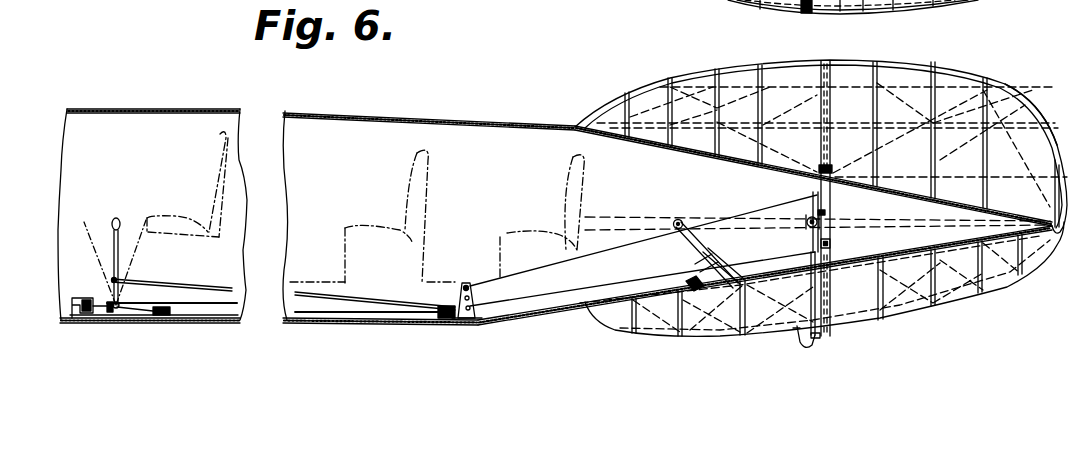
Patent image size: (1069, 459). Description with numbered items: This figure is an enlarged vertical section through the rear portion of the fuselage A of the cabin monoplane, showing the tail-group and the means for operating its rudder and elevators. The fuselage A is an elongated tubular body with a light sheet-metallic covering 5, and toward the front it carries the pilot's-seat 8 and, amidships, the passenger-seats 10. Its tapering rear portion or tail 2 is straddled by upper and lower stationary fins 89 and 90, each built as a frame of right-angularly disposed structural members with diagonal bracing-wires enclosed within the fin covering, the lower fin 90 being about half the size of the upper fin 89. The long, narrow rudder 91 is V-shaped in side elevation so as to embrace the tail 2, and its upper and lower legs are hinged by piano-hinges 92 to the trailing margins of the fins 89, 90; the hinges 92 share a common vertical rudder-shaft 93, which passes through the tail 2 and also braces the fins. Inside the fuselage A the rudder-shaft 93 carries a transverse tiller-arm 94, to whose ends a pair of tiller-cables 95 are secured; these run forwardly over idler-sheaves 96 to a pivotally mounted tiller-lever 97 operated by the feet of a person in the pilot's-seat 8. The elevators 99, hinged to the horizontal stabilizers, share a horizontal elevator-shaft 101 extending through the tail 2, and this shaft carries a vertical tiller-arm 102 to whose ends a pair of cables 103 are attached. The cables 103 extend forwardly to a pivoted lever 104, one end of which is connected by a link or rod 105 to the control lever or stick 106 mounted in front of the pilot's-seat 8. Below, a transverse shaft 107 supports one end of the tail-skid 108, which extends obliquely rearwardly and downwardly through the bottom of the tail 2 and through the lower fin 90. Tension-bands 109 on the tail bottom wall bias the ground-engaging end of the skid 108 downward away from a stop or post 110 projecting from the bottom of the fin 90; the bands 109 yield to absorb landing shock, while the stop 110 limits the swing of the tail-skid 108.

The tail 2 is at (1010, 210).
The covering 5 is at (547, 314).
The pilot's-seat 8 is at (176, 218).
The passenger-seats 10 is at (507, 235).
The upper fin 89 is at (667, 84).
The lower fin 90 is at (657, 336).
The rudder 91 is at (1020, 102).
The piano-hinges 92 is at (832, 97).
The rudder-shaft 93 is at (812, 193).
The tiller-arm 94 is at (832, 243).
The tiller-cables 95 is at (208, 316).
The idler-sheaves 96 is at (162, 320).
The tiller-lever 97 is at (88, 297).
The elevators 99 is at (982, 1).
The elevator-shaft 101 is at (806, 226).
The vertical tiller-arm 102 is at (825, 212).
The cables 103 is at (640, 282).
The pivoted lever 104 is at (480, 288).
The link or rod 105 is at (208, 288).
The control lever 106 is at (118, 220).
The shaft 107 is at (674, 222).
The tail-skid 108 is at (807, 346).
The tension-bands 109 is at (700, 268).
The stop or post 110 is at (819, 337).
The fuselage A is at (240, 110).